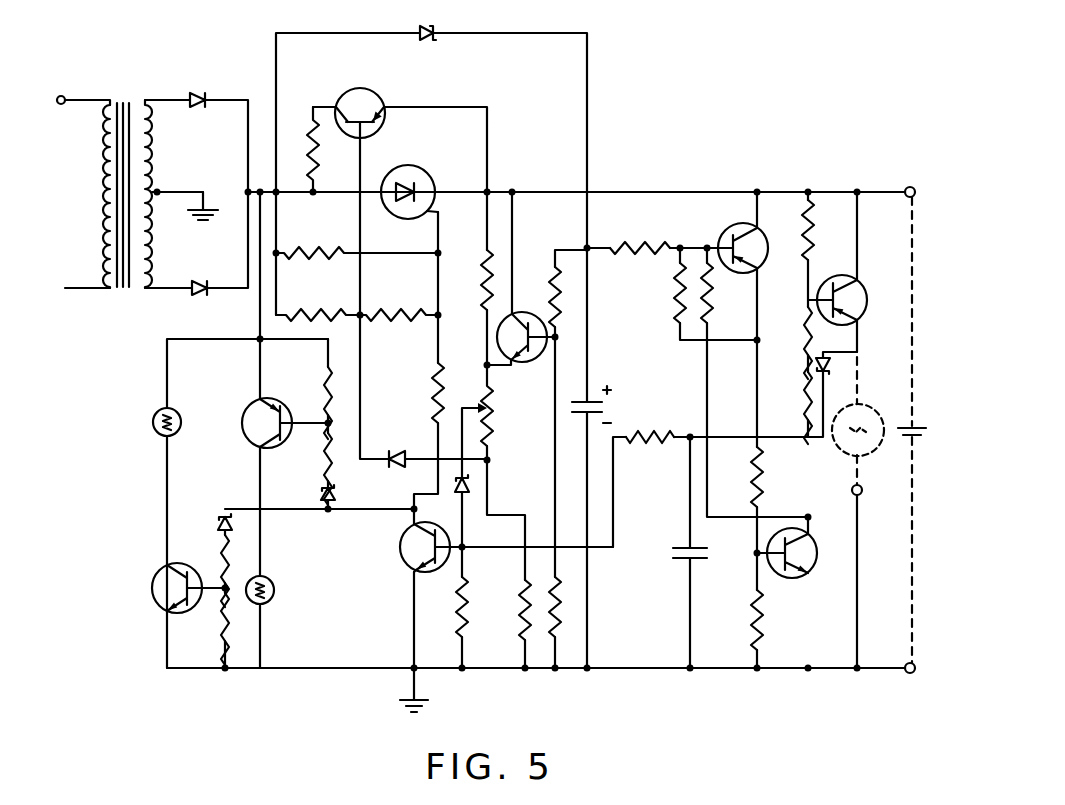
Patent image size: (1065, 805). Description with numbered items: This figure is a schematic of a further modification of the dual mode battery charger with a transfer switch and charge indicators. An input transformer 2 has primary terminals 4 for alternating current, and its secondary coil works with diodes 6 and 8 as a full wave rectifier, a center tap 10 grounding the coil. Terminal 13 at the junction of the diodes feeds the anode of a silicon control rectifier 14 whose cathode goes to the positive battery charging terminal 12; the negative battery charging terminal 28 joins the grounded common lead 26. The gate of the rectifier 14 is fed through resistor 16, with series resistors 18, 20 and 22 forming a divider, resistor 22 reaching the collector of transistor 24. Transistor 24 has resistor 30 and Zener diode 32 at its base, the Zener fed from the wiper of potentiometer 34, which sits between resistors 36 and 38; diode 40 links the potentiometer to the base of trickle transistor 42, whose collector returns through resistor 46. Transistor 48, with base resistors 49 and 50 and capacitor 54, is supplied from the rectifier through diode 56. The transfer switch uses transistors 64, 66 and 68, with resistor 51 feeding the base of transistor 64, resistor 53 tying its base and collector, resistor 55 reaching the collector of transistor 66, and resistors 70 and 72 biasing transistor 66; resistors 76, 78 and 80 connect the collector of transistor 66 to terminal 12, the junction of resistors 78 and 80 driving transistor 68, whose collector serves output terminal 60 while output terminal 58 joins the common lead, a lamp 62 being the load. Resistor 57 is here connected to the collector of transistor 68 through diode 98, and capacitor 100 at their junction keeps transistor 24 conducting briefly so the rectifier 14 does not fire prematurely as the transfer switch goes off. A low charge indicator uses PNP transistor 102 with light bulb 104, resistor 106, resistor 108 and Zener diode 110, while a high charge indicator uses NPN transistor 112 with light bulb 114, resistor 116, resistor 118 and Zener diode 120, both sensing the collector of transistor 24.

The input transformer 2 is at (120, 294).
The terminals 4 is at (64, 96).
The diode 6 is at (199, 94).
The diode 8 is at (198, 294).
The center tap 10 is at (184, 190).
The positive battery charging terminal 12 is at (907, 188).
The terminal 13 is at (246, 191).
The silicon control rectifier 14 is at (430, 178).
The resistor 16 is at (307, 248).
The resistor 18 is at (321, 310).
The resistor 20 is at (389, 310).
The resistor 22 is at (433, 397).
The transistor 24 is at (402, 560).
The common lead 26 is at (328, 672).
The negative battery charging terminal 28 is at (907, 673).
The resistor 30 is at (467, 610).
The Zener diode 32 is at (470, 492).
The potentiometer 34 is at (495, 432).
The resistor 36 is at (481, 272).
The resistor 38 is at (517, 587).
The diode 40 is at (388, 478).
The transistor 42 is at (364, 89).
The resistor 46 is at (310, 137).
The transistor 48 is at (527, 302).
The resistor 49 is at (566, 617).
The resistor 50 is at (562, 284).
The resistor 51 is at (634, 241).
The resistor 53 is at (676, 305).
The capacitor 54 is at (589, 400).
The resistor 55 is at (714, 298).
The diode 56 is at (431, 40).
The resistor 57 is at (655, 432).
The output terminal 58 is at (875, 509).
The output terminal 60 is at (862, 356).
The incandescent filament lamp 62 is at (900, 458).
The transistor 64 is at (723, 234).
The transistor 66 is at (818, 557).
The transistor 68 is at (869, 304).
The resistor 70 is at (763, 491).
The resistor 72 is at (764, 634).
The resistor 76 is at (805, 405).
The resistor 78 is at (810, 322).
The resistor 80 is at (811, 257).
The diode 98 is at (830, 370).
The capacitor 100 is at (680, 545).
The PNP transistor 102 is at (243, 407).
The light bulb 104 is at (277, 597).
The resistor 106 is at (322, 390).
The resistor 108 is at (322, 445).
The Zener diode 110 is at (318, 505).
The NPN transistor 112 is at (151, 587).
The light bulb 114 is at (152, 422).
The resistor 116 is at (229, 628).
The resistor 118 is at (220, 552).
The Zener diode 120 is at (217, 522).